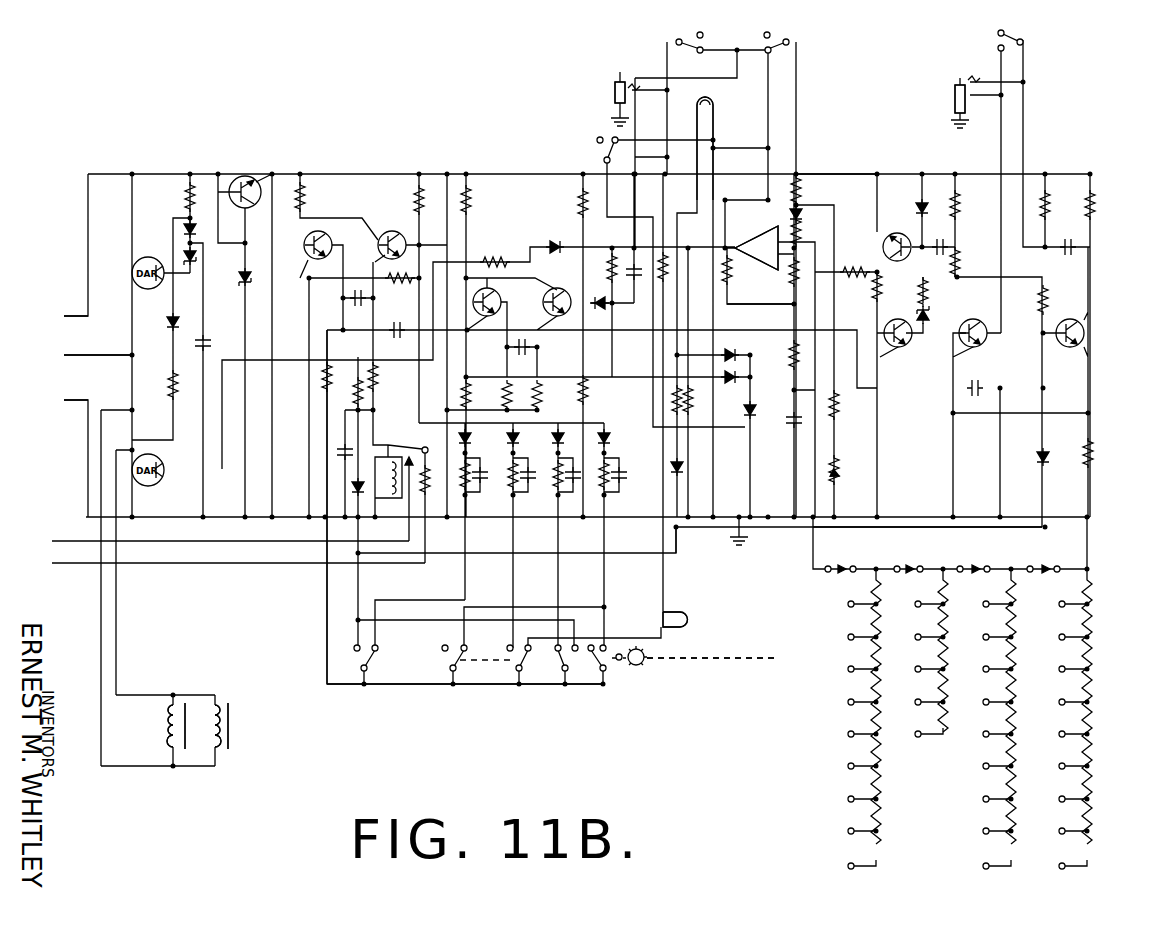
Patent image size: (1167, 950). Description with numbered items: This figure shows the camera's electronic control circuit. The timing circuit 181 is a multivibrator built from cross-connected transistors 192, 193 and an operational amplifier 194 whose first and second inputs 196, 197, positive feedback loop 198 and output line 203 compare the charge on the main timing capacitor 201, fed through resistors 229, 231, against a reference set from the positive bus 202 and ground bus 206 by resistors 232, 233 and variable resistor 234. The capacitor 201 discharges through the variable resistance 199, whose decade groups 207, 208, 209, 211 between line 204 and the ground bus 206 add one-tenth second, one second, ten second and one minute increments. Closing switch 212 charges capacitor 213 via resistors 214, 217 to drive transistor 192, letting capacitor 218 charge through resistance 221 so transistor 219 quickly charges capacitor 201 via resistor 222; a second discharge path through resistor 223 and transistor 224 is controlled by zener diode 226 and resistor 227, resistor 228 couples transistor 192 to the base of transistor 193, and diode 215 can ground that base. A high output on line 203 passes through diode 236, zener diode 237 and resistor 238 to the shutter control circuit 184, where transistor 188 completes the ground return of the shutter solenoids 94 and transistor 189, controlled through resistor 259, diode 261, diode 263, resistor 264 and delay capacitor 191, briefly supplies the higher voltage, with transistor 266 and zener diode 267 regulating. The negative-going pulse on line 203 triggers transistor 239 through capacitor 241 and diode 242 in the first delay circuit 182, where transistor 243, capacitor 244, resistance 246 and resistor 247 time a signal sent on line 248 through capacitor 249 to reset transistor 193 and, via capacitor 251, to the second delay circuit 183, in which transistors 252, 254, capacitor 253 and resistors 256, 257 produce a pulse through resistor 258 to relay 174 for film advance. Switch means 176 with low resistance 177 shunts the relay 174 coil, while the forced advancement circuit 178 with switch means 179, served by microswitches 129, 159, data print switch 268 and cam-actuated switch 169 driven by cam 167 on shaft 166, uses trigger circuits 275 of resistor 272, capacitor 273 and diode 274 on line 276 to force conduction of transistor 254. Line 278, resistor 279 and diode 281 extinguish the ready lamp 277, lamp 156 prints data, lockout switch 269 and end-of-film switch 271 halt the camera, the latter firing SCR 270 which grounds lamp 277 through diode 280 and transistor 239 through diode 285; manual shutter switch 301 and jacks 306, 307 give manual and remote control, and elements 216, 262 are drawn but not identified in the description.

The rotary motion solenoids 94 is at (214, 700).
The microswitch 129 is at (562, 672).
The lamp 156 is at (686, 612).
The microswitch 159 is at (372, 664).
The output drive shaft 166 is at (732, 654).
The first cam means 167 is at (644, 668).
The first cam-actuated switch means 169 is at (608, 672).
The relay 174 is at (372, 479).
The switch means 176 is at (318, 692).
The low resistance 177 is at (350, 418).
The automatic forced advancement circuit 178 is at (590, 414).
The switch means 179 is at (540, 692).
The timing circuit 181 is at (1070, 298).
The first delay circuit 182 is at (526, 206).
The second delay circuit 183 is at (358, 206).
The shutter control circuit 184 is at (66, 380).
The first transistor 188 is at (164, 464).
The second transistor 189 is at (132, 273).
The delay means 191 is at (208, 338).
The transistor 192 is at (977, 314).
The transistor 193 is at (1088, 324).
The operational amplifier integrated circuit device 194 is at (743, 271).
The first input line 196 is at (813, 235).
The second input line 197 is at (812, 218).
The positive feedback loop 198 is at (748, 305).
The variable resistance 199 is at (826, 724).
The capacitor 201 is at (790, 432).
The positive d.c. bus 202 is at (817, 174).
The output 203 is at (745, 243).
The line 204 is at (815, 546).
The ground bus 206 is at (922, 516).
The chain of resistors and switch 207 is at (1090, 582).
The group 208 is at (1020, 576).
The group 209 is at (950, 576).
The group 211 is at (882, 576).
The switch 212 is at (1024, 36).
The capacitor 213 is at (1068, 257).
The resistor 214 is at (1094, 206).
The diode 215 is at (1049, 456).
The resistor 216 is at (1061, 205).
The resistor 217 is at (1093, 458).
The capacitor 218 is at (936, 227).
The transistor 219 is at (882, 246).
The resistance 221 is at (962, 260).
The resistor 222 is at (860, 282).
The resistor 223 is at (886, 272).
The transistor 224 is at (897, 349).
The zener diode 226 is at (937, 333).
The resistor 227 is at (919, 296).
The resistor 228 is at (1046, 300).
The resistor 229 is at (786, 276).
The resistor 231 is at (784, 364).
The resistor 232 is at (800, 188).
The resistor 233 is at (851, 406).
The variable resistor 234 is at (849, 478).
The diode 236 is at (668, 282).
The zener diode 237 is at (555, 243).
The resistor 238 is at (495, 258).
The transistor 239 is at (537, 306).
The capacitor 241 is at (612, 253).
The diode 242 is at (600, 308).
The transistor 243 is at (506, 298).
The capacitor 244 is at (526, 350).
The resistance 246 is at (470, 206).
The resistor 247 is at (524, 299).
The signal line 248 is at (628, 314).
The capacitor 249 is at (978, 382).
The capacitor 251 is at (401, 324).
The transistor 252 is at (335, 241).
The capacitor 253 is at (361, 305).
The transistor 254 is at (378, 248).
The resistor 256 is at (396, 286).
The resistor 257 is at (346, 377).
The resistor 258 is at (390, 377).
The resistor 259 is at (186, 194).
The diode 261 is at (184, 226).
The zener diode 262 is at (184, 254).
The diode 263 is at (170, 326).
The resistor 264 is at (159, 385).
The transistor 266 is at (250, 176).
The zener diode 267 is at (240, 278).
The data print switch 268 is at (518, 676).
The cassette counter lockout switch 269 is at (782, 36).
The silicon controlled rectifier 270 is at (744, 430).
The end of film switch 271 is at (603, 155).
The resistor 272 is at (614, 460).
The capacitor 273 is at (624, 472).
The diode 274 is at (608, 436).
The trigger circuit 275 is at (620, 490).
The line 276 is at (422, 402).
The camera ready indicator lamp 277 is at (716, 102).
The line 278 is at (680, 540).
The resistor 279 is at (679, 414).
The diode 280 is at (734, 352).
The diode 281 is at (684, 470).
The diode 285 is at (721, 388).
The manual shutter switch 301 is at (682, 36).
The jack 306 is at (614, 92).
The jack 307 is at (957, 86).